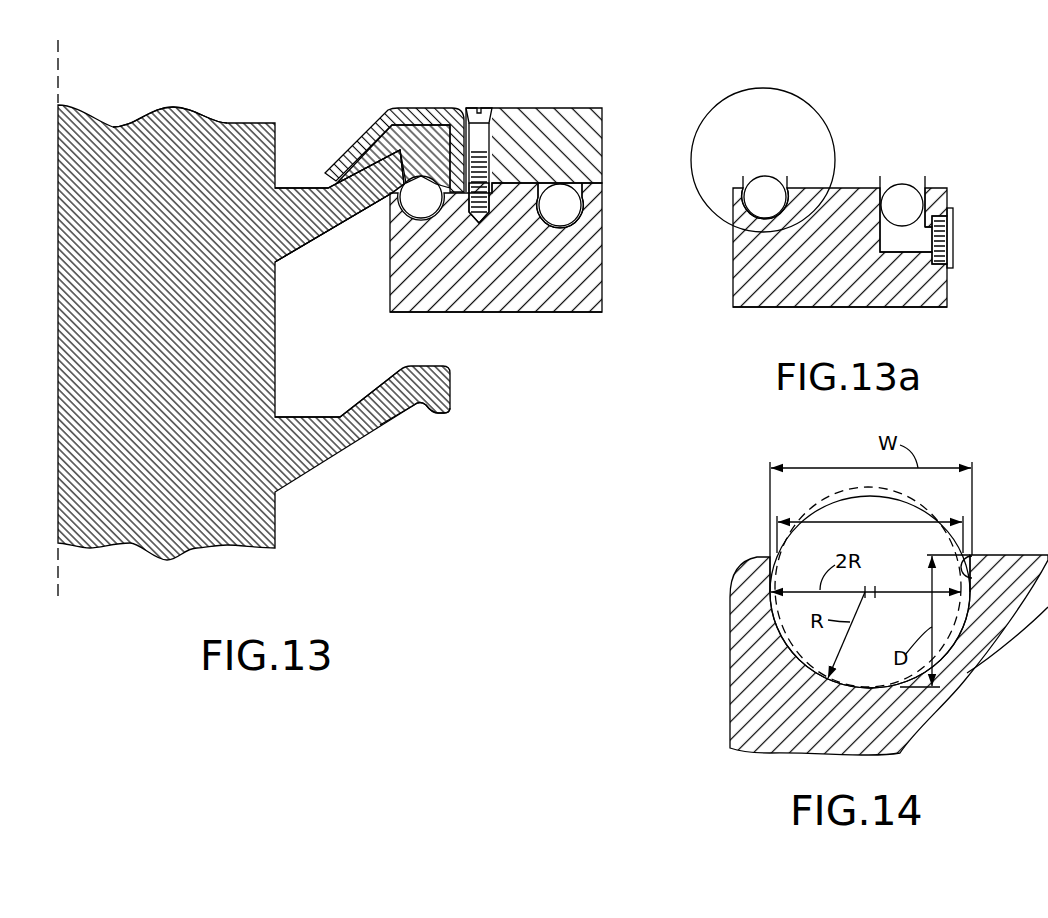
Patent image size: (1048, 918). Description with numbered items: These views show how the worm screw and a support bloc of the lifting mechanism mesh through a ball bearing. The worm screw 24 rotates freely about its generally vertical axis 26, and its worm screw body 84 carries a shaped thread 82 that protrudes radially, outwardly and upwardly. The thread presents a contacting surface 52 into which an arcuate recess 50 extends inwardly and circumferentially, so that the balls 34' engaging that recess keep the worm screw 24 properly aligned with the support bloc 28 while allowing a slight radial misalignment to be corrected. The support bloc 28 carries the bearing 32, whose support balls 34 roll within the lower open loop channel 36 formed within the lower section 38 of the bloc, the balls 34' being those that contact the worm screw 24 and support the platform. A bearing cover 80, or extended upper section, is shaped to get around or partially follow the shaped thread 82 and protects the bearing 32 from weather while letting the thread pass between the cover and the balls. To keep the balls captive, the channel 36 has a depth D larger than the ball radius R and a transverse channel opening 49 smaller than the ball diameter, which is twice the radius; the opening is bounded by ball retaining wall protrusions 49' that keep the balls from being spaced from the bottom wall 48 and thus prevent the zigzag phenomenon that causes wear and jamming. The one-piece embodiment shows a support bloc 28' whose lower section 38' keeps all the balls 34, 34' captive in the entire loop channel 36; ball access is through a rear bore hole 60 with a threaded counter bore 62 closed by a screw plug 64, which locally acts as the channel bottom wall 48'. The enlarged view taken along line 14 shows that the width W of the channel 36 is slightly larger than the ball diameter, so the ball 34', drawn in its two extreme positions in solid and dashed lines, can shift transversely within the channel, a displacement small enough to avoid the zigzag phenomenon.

In FIG. 13, the worm screw 24 is at (175, 104).
In FIG. 13, the vertical axis 26 is at (60, 58).
In FIG. 13, the support bloc 28 is at (497, 358).
In FIG. 13A, the support bloc 28' is at (857, 356).
In FIG. 13, the bearing 32 is at (584, 200).
In FIG. 13, the support balls 34 is at (598, 213).
In FIG. 13A, the support balls 34 is at (902, 176).
In FIG. 13, the balls 34' is at (446, 142).
In FIG. 13A, the balls 34' is at (767, 166).
In FIG. 14, the balls 34' is at (840, 579).
In FIG. 13, the lower open loop channel 36 is at (547, 190).
In FIG. 13A, the lower open loop channel 36 is at (780, 183).
In FIG. 14, the lower open loop channel 36 is at (963, 547).
In FIG. 13, the lower section 38 is at (525, 247).
In FIG. 13A, the lower section 38' is at (809, 269).
In FIG. 14, the lower section 38' is at (865, 655).
In FIG. 13A, the tower 14 is at (763, 160).
In FIG. 13A, the bottom wall 48 is at (747, 184).
In FIG. 14, the bottom wall 48 is at (870, 592).
In FIG. 13A, the channel bottom wall 48' is at (885, 185).
In FIG. 14, the channel opening 49 is at (870, 498).
In FIG. 14, the ball retaining wall protrusions 49' is at (871, 546).
In FIG. 13, the arcuate recess 50 is at (418, 412).
In FIG. 13, the contacting surface 52 is at (325, 238).
In FIG. 13A, the rear bore hole 60 is at (910, 250).
In FIG. 13A, the threaded counter bore 62 is at (947, 243).
In FIG. 13A, the screw plug 64 is at (953, 263).
In FIG. 13, the bearing cover 80 is at (383, 110).
In FIG. 13, the shaped thread 82 is at (305, 187).
In FIG. 13, the worm screw body 84 is at (237, 120).